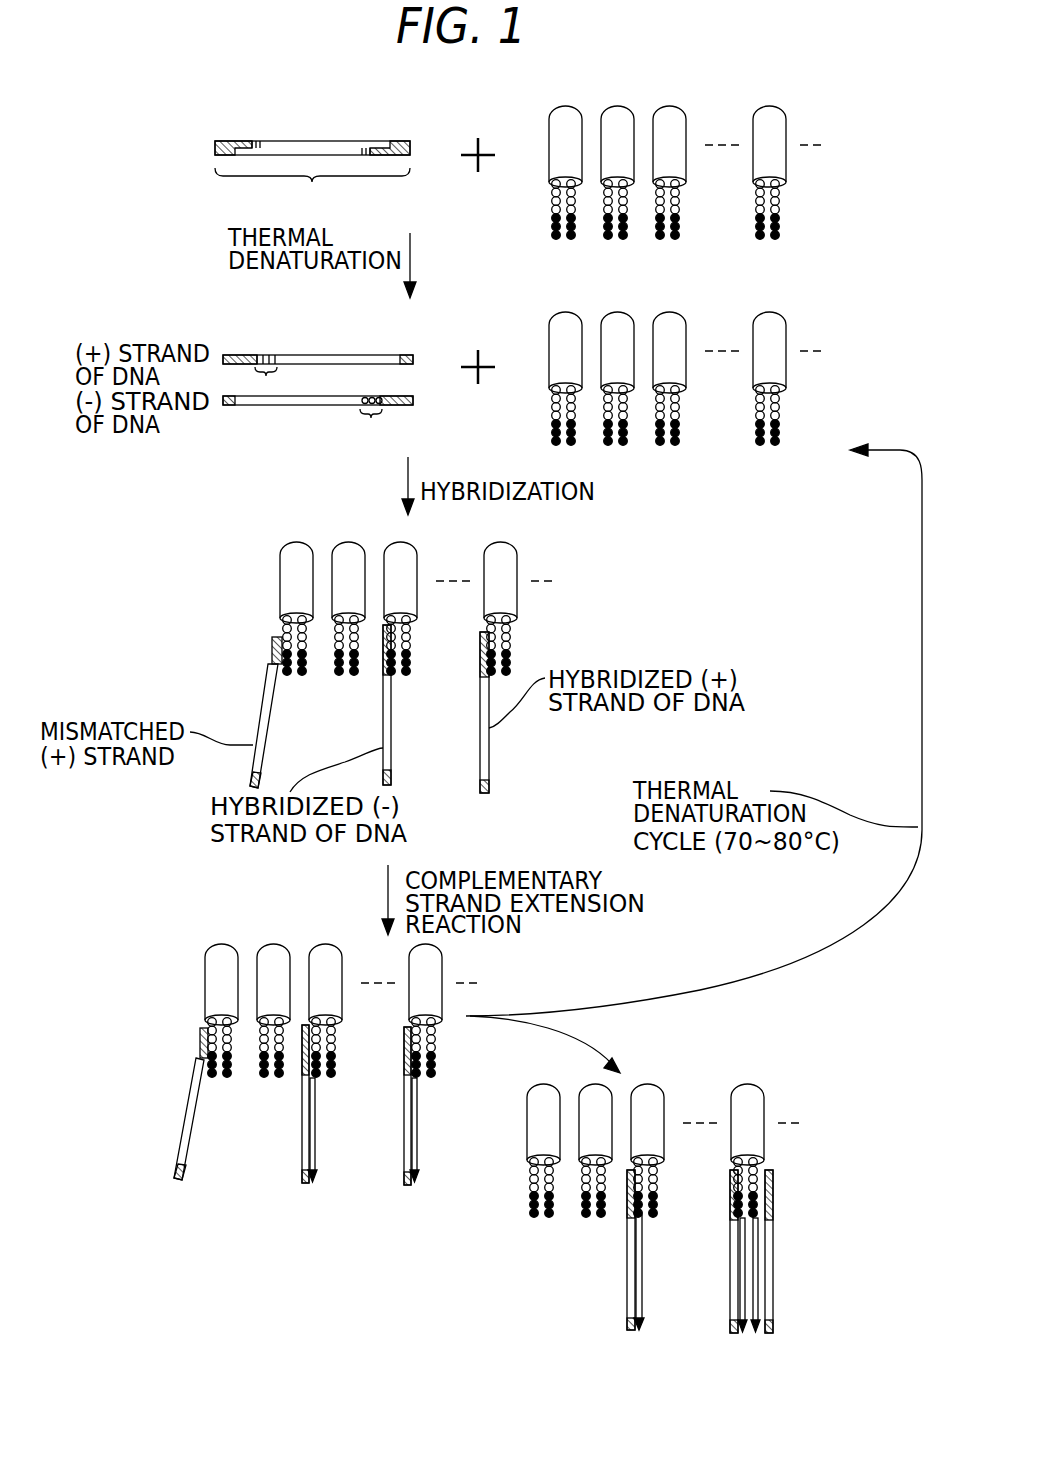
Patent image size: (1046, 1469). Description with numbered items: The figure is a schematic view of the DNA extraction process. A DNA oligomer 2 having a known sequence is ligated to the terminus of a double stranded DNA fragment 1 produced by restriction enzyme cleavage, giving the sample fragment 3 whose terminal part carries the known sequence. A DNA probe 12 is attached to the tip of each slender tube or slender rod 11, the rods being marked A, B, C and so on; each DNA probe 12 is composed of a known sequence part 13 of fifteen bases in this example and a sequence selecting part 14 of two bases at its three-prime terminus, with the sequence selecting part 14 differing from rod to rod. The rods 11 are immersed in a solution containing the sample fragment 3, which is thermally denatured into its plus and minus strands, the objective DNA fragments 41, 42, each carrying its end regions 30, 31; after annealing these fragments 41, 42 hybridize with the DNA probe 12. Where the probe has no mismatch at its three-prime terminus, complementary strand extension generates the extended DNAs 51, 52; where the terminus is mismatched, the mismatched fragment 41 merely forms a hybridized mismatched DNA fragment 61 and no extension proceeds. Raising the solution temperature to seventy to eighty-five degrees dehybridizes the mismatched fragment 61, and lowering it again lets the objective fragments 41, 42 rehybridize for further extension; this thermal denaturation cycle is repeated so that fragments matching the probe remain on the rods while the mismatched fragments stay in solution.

The double stranded DNA fragment 1 is at (318, 141).
The DNA oligomer 2 is at (232, 141).
The sample fragment 3 is at (312, 188).
The slender tube or slender rod 11 is at (568, 110).
The DNA probe 12 is at (583, 190).
The known sequence part 13 is at (550, 186).
The sequence selecting part 14 is at (550, 233).
The target region on (+) strand 30 is at (267, 376).
The target region on (-) strand 31 is at (372, 420).
The objective DNA fragment 41 is at (320, 355).
The objective DNA fragment 42 is at (300, 405).
The DNA generated through complementary strand extension 51 is at (418, 1157).
The DNA generated through complementary strand extension 52 is at (318, 1157).
The hybridized mismatched DNA fragment 61 is at (187, 1098).